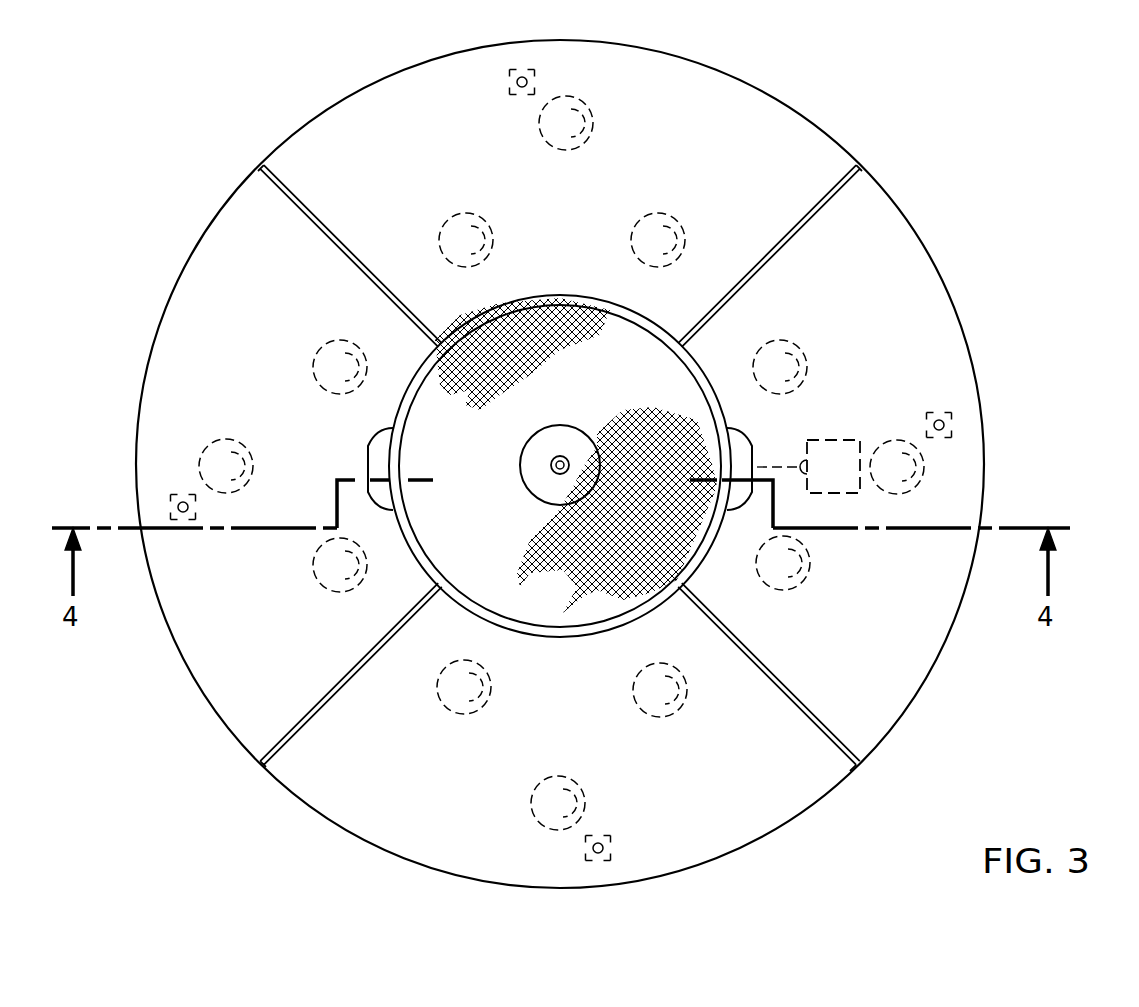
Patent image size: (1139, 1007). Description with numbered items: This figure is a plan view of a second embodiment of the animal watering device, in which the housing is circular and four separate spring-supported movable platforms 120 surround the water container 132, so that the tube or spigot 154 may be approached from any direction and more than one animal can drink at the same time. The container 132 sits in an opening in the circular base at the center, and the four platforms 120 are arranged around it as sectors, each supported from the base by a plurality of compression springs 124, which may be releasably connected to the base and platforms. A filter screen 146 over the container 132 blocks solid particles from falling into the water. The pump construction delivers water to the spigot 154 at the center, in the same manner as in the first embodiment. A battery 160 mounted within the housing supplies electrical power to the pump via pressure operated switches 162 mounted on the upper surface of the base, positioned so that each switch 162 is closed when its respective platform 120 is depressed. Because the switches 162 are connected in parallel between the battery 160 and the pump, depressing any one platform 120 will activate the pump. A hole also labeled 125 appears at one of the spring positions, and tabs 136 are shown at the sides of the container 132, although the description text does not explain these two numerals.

The movable platform 120 is at (315, 135).
The compression spring 124 is at (537, 120).
The hole 125 is at (316, 573).
The water container 132 is at (697, 562).
The tabs 136 is at (380, 455).
The filter screen 146 is at (658, 412).
The spigot 154 is at (551, 463).
The battery 160 is at (842, 437).
The pressure operated switch 162 is at (508, 75).